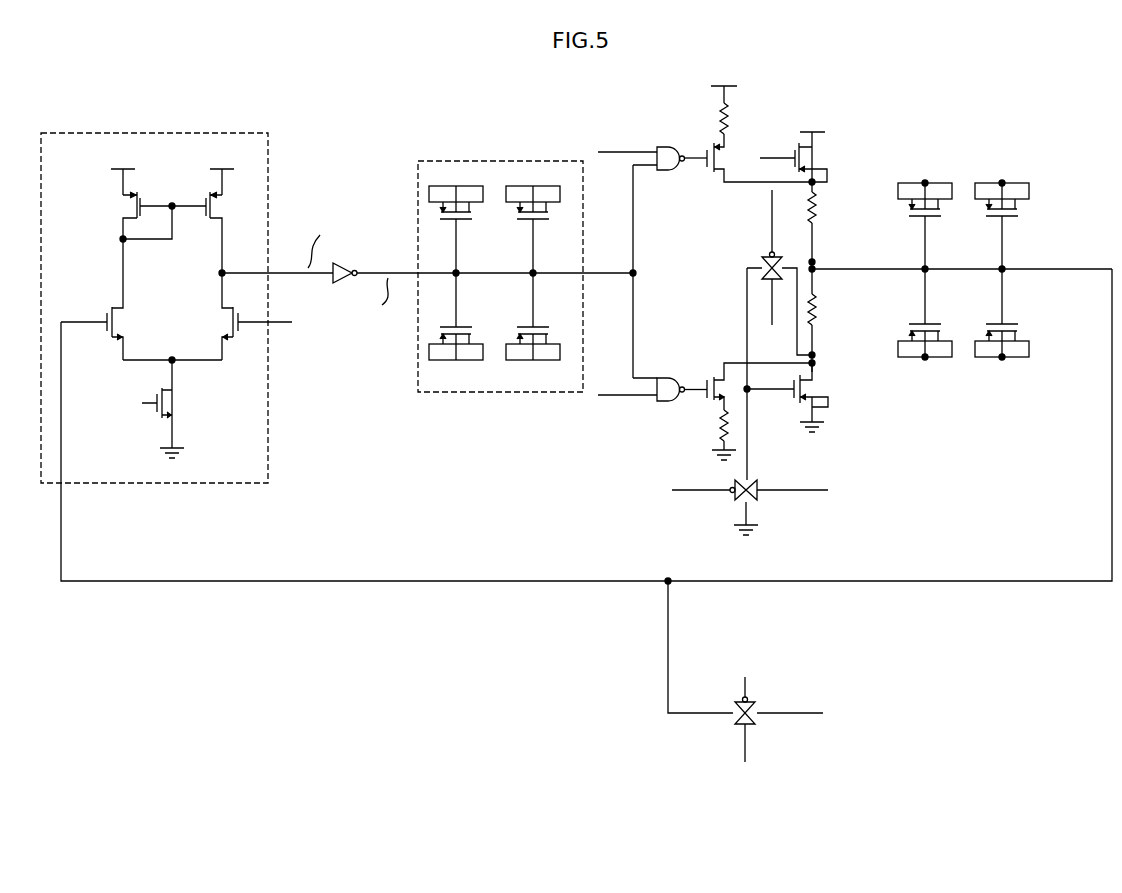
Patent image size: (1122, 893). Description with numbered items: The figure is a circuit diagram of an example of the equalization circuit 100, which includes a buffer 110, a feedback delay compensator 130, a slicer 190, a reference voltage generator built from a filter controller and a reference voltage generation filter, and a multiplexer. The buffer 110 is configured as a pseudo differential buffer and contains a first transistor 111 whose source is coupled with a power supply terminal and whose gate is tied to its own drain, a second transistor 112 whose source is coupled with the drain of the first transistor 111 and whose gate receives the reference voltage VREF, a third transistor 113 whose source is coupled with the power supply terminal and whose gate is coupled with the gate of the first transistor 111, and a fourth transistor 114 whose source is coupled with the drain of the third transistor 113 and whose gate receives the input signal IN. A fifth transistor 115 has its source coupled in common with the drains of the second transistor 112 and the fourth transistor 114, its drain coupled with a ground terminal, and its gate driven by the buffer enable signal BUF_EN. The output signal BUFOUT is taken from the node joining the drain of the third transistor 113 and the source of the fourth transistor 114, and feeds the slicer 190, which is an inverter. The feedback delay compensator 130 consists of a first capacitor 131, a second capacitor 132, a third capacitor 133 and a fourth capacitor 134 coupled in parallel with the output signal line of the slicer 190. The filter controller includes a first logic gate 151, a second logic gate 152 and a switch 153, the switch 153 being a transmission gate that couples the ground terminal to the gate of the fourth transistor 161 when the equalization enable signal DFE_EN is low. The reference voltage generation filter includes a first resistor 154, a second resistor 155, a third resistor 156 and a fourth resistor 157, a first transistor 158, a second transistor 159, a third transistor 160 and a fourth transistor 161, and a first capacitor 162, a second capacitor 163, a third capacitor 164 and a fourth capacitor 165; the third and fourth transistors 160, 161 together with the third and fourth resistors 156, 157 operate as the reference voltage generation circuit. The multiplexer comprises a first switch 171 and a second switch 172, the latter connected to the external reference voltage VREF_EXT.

The equalization circuit 100 is at (1090, 78).
The buffer 110 is at (258, 133).
The first transistor 111 is at (131, 215).
The second transistor 112 is at (108, 299).
The third transistor 113 is at (213, 232).
The fourth transistor 114 is at (250, 316).
The fifth transistor 115 is at (140, 409).
The feedback delay compensator 130 is at (543, 161).
The first capacitor 131 is at (456, 218).
The second capacitor 132 is at (456, 330).
The third capacitor 133 is at (533, 218).
The fourth capacitor 134 is at (533, 330).
The slicer 190 is at (356, 258).
The first logic gate 151 is at (665, 147).
The second logic gate 152 is at (676, 380).
The switch 153 is at (760, 475).
The first resistor 154 is at (730, 121).
The second resistor 155 is at (701, 429).
The third resistor 156 is at (822, 211).
The fourth resistor 157 is at (822, 313).
The first transistor 158 is at (703, 178).
The second transistor 159 is at (712, 371).
The third transistor 160 is at (820, 150).
The fourth transistor 161 is at (820, 384).
The first capacitor 162 is at (912, 176).
The second capacitor 163 is at (918, 363).
The third capacitor 164 is at (989, 176).
The fourth capacitor 165 is at (995, 363).
The first switch 171 is at (757, 262).
The second switch 172 is at (762, 706).